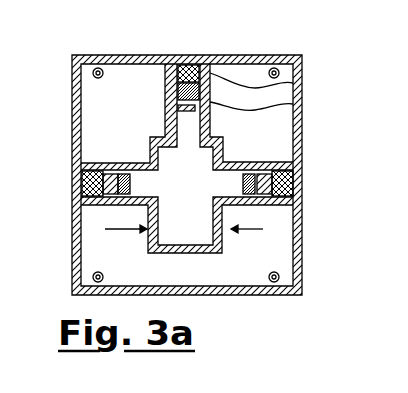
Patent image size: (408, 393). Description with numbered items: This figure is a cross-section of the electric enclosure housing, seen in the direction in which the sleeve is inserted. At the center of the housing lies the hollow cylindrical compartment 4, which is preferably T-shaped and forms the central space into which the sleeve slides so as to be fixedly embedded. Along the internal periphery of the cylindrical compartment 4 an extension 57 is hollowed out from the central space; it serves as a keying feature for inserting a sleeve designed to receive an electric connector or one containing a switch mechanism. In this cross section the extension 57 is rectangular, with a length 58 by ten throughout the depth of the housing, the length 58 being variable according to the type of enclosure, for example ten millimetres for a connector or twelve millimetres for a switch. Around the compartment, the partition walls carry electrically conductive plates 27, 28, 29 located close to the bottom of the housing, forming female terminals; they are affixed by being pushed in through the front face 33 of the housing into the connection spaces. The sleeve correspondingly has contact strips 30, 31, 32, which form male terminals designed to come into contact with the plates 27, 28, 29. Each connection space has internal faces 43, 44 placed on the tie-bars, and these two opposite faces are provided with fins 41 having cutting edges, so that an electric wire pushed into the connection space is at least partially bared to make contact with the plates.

The cylindrical compartment 4 is at (158, 140).
The electrically conductive plate 27 is at (293, 83).
The electrically conductive plate 28 is at (265, 162).
The electrically conductive plate 29 is at (113, 165).
The contact strip 30 is at (293, 104).
The contact strip 31 is at (251, 204).
The contact strip 32 is at (114, 210).
The front face 33 is at (400, 131).
The fins 41 is at (203, 58).
The internal face 43 is at (163, 75).
The internal face 44 is at (203, 66).
The extension 57 is at (203, 253).
The length 58 is at (251, 228).